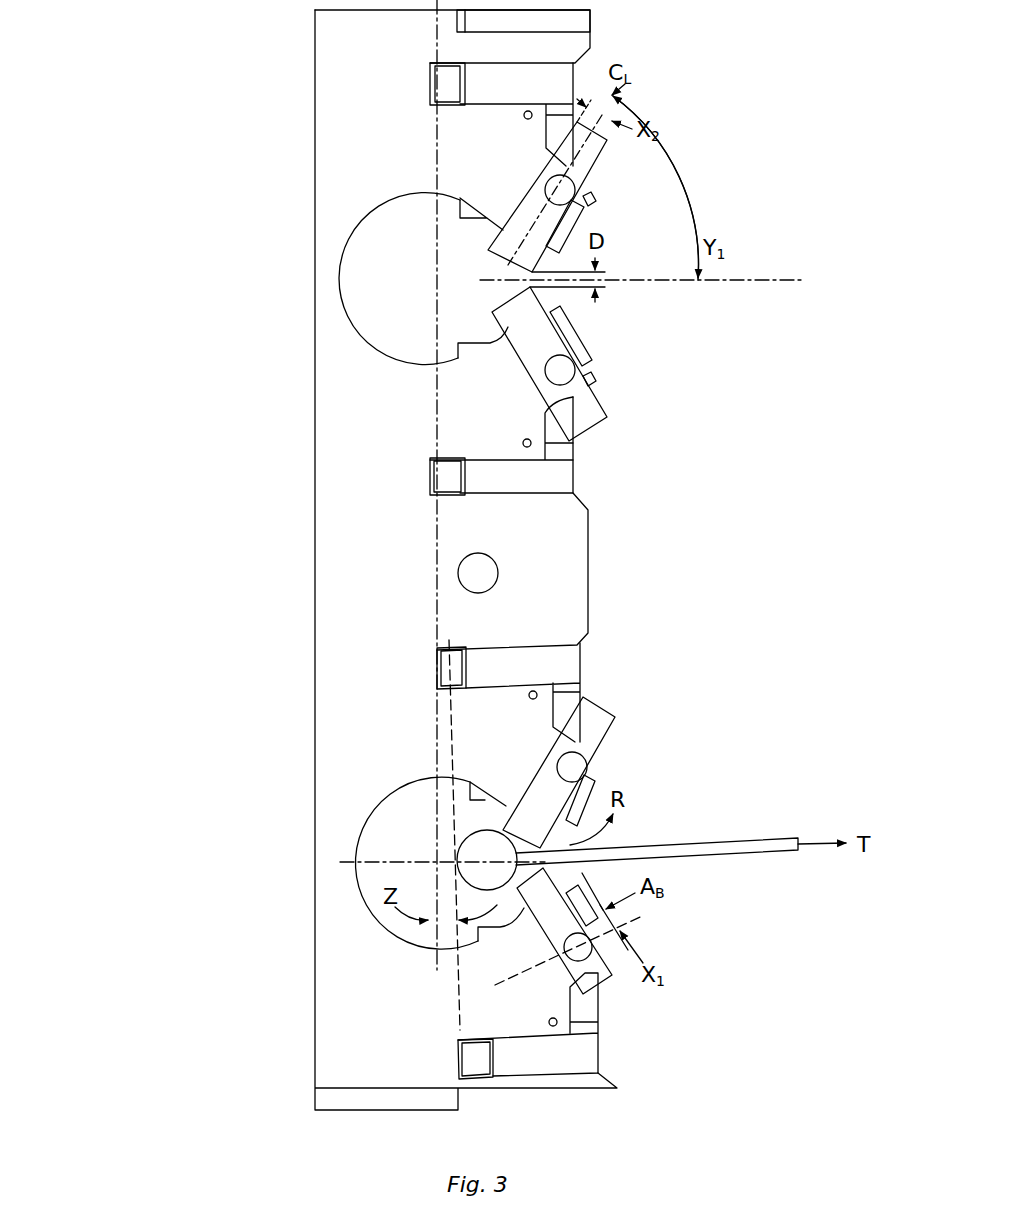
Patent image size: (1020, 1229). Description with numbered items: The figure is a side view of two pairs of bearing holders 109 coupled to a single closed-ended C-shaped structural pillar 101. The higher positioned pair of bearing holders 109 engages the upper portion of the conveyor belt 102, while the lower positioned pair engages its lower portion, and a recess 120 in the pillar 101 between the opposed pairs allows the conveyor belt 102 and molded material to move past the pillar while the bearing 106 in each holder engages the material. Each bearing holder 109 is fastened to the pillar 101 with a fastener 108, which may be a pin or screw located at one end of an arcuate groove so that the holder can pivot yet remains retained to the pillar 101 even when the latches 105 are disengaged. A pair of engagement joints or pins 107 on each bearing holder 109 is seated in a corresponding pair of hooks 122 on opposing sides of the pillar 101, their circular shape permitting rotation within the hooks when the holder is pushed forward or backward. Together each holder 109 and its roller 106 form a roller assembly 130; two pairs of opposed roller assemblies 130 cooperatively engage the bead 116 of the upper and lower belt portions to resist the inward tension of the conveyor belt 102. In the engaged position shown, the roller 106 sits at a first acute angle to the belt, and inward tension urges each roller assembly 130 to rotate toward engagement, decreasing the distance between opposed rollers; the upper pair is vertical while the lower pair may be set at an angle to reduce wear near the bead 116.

The closed-ended C-shaped structural pillar 101 is at (257, 618).
The conveyor belt 102 is at (705, 862).
The latch 105 is at (445, 83).
The bearing 106 is at (600, 152).
The engagement joint or pin 107 is at (572, 188).
The fastener 108 is at (524, 115).
The bearing holder 109 is at (565, 482).
The bead 116 is at (457, 857).
The recess 120 is at (375, 283).
The hook 122 is at (580, 378).
The roller assembly 130 is at (655, 90).